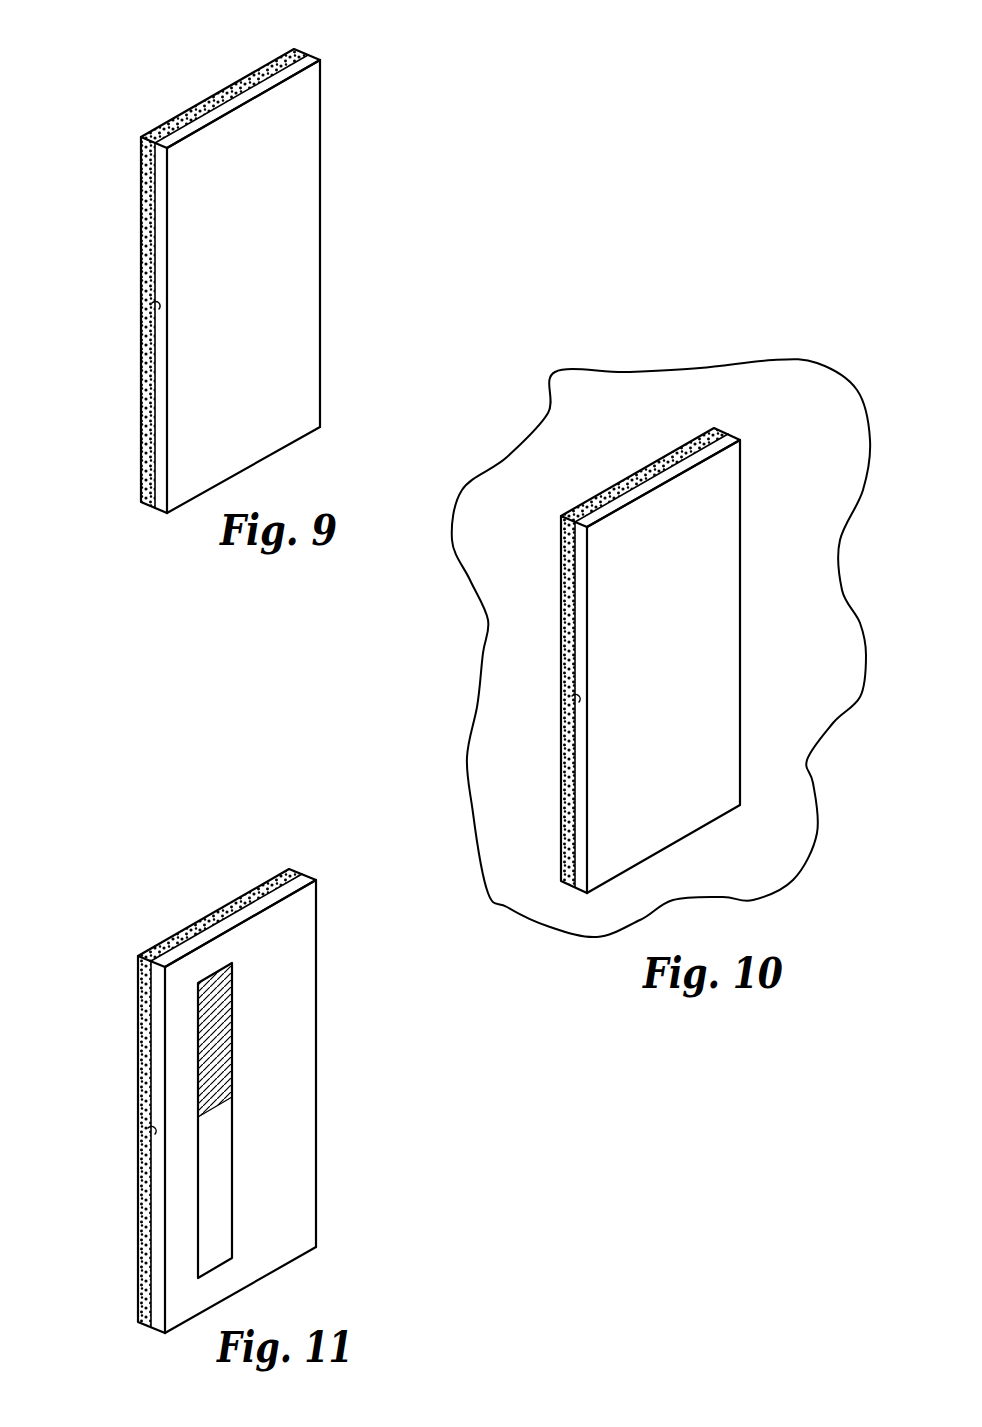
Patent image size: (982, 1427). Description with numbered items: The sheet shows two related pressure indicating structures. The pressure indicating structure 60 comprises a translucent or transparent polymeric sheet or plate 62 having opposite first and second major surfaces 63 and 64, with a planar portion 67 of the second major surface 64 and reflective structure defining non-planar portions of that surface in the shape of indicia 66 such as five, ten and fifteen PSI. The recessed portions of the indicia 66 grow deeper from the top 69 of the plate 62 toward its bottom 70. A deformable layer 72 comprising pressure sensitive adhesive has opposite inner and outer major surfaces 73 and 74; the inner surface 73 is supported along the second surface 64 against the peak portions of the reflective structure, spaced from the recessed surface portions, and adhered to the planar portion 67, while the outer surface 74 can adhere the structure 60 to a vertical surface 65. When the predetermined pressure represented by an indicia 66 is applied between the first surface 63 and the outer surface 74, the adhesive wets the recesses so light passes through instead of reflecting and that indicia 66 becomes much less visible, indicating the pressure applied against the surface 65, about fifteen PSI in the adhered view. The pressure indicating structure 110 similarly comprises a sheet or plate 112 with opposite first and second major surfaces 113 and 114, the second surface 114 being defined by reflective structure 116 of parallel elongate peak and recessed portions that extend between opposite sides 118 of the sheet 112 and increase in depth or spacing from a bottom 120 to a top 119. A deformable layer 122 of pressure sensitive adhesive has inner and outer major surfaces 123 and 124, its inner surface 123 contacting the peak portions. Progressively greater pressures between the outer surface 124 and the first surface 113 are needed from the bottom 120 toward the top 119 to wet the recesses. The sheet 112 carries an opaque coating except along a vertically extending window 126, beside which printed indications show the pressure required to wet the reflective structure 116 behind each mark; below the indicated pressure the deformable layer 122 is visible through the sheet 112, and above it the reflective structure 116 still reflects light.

In FIG. 9, the pressure indicating structure 60 is at (345, 50).
In FIG. 10, the pressure indicating structure 60 is at (765, 436).
In FIG. 9, the sheet or plate 62 is at (300, 158).
In FIG. 10, the sheet or plate 62 is at (720, 535).
In FIG. 9, the first major surface 63 is at (297, 318).
In FIG. 10, the first major surface 63 is at (717, 633).
In FIG. 9, the second major surface 64 is at (150, 243).
In FIG. 10, the second major surface 64 is at (568, 623).
In FIG. 10, the vertical surface 65 is at (600, 392).
In FIG. 9, the indicia 66 is at (287, 187).
In FIG. 10, the indicia 66 is at (707, 672).
In FIG. 11, the indicia 66 is at (280, 1003).
In FIG. 9, the planar portion 67 is at (149, 396).
In FIG. 10, the planar portion 67 is at (569, 773).
In FIG. 9, the top 69 is at (228, 103).
In FIG. 10, the top 69 is at (650, 483).
In FIG. 9, the bottom 70 is at (281, 452).
In FIG. 10, the bottom 70 is at (699, 828).
In FIG. 9, the deformable layer 72 is at (142, 468).
In FIG. 10, the deformable layer 72 is at (562, 847).
In FIG. 9, the inner major surface 73 is at (150, 308).
In FIG. 10, the inner major surface 73 is at (570, 702).
In FIG. 9, the outer major surface 74 is at (141, 177).
In FIG. 10, the outer major surface 74 is at (561, 553).
In FIG. 11, the pressure indicating structure 110 is at (336, 878).
In FIG. 11, the sheet or plate 112 is at (252, 907).
In FIG. 11, the first major surface 113 is at (290, 1138).
In FIG. 11, the second major surface 114 is at (143, 1062).
In FIG. 11, the reflective structure 116 is at (145, 1215).
In FIG. 11, the opposite sides 118 is at (315, 970).
In FIG. 11, the top 119 is at (188, 938).
In FIG. 11, the bottom 120 is at (273, 1270).
In FIG. 11, the deformable layer 122 is at (139, 1288).
In FIG. 11, the inner major surface 123 is at (147, 1131).
In FIG. 11, the outer major surface 124 is at (138, 995).
In FIG. 11, the window 126 is at (214, 1068).